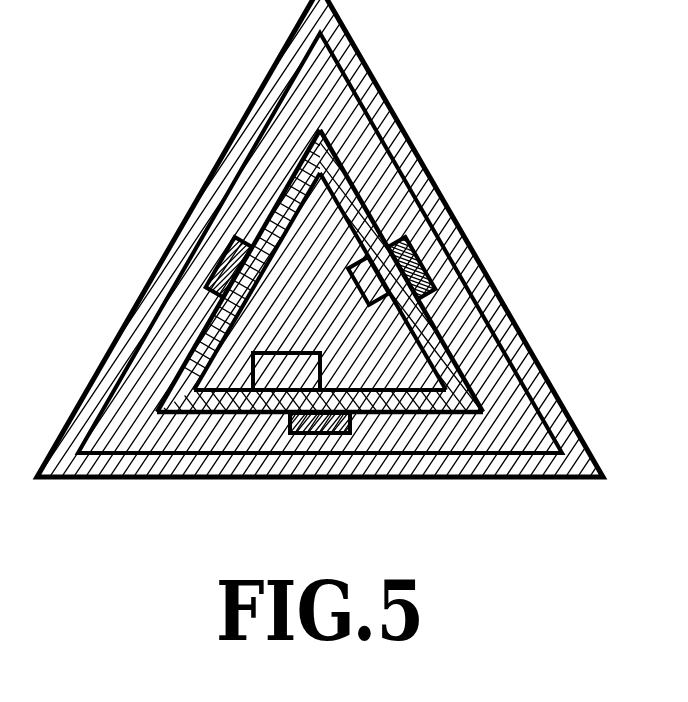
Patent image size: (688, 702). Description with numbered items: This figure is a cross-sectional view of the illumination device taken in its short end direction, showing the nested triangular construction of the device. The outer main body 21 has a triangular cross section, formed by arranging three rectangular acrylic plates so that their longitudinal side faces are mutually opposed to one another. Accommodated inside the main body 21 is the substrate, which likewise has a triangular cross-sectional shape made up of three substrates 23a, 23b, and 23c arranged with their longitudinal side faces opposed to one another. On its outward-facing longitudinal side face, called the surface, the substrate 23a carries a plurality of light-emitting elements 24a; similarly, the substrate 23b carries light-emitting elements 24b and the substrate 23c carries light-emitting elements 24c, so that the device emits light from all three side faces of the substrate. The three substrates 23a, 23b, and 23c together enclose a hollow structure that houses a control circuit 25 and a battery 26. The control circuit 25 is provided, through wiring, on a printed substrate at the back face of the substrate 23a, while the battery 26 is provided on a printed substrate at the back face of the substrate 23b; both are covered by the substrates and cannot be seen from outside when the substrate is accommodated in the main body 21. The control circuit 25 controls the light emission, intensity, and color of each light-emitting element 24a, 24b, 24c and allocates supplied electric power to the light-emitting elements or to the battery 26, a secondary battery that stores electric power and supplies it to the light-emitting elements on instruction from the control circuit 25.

The main body 21 is at (458, 208).
The substrate 23a is at (458, 360).
The substrate 23b is at (418, 428).
The substrate 23c is at (305, 146).
The light-emitting element 24a is at (393, 243).
The light-emitting element 24b is at (290, 429).
The light-emitting element 24c is at (215, 298).
The control circuit 25 is at (375, 310).
The battery 26 is at (290, 352).